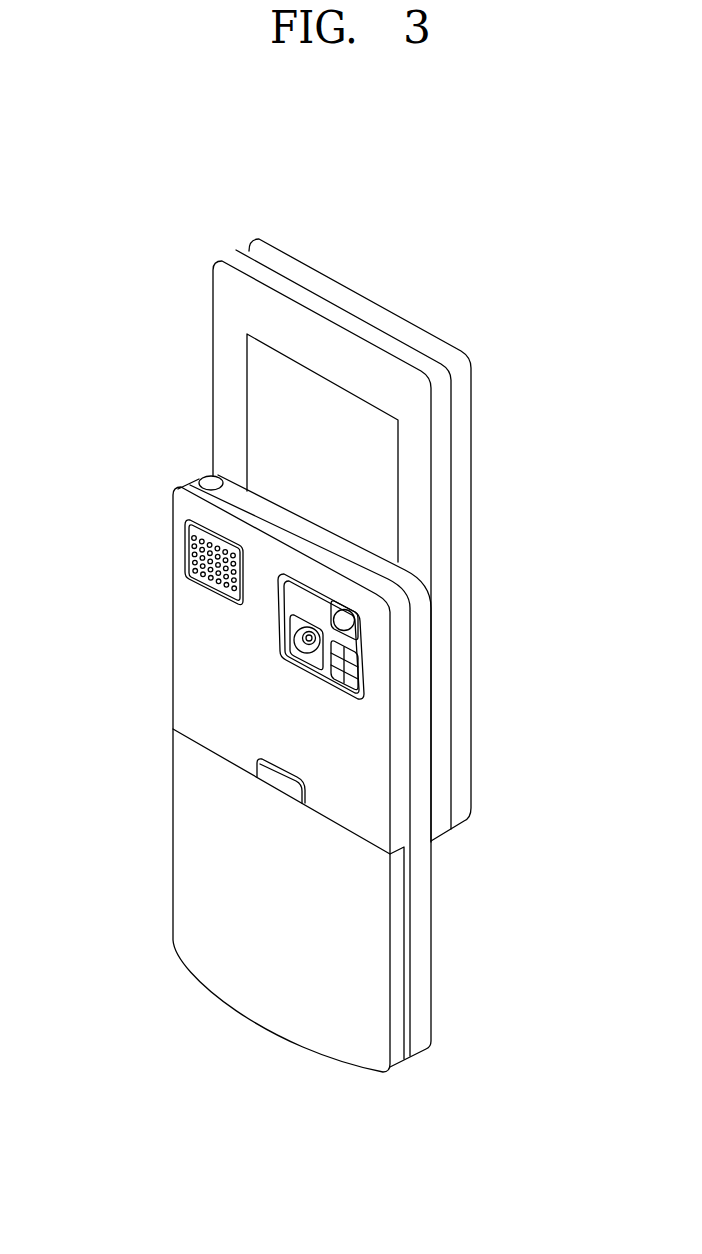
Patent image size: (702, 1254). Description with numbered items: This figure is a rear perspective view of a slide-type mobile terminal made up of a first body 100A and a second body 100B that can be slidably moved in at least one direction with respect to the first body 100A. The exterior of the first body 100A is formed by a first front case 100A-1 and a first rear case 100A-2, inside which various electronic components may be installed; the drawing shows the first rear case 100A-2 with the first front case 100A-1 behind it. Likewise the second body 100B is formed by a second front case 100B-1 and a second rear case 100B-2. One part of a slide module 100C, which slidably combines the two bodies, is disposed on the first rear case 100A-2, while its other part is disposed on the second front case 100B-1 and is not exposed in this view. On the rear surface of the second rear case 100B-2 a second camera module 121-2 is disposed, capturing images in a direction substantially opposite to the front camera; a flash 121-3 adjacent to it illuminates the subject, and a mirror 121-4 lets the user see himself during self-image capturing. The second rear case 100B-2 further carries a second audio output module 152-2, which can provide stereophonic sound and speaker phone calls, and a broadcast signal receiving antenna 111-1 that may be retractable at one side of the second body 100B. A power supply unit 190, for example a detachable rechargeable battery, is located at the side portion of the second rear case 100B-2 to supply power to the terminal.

The first body 100A is at (282, 516).
The first front case 100A-1 is at (252, 248).
The first rear case 100A-2 is at (238, 259).
The slide module 100C is at (250, 412).
The broadcast signal receiving antenna 111-1 is at (205, 481).
The second audio output module 152-2 is at (193, 555).
The second body 100B is at (313, 752).
The second front case 100B-1 is at (420, 868).
The second rear case 100B-2 is at (398, 815).
The second camera module 121-2 is at (310, 642).
The flash 121-3 is at (355, 690).
The mirror 121-4 is at (348, 616).
The power supply unit 190 is at (185, 808).